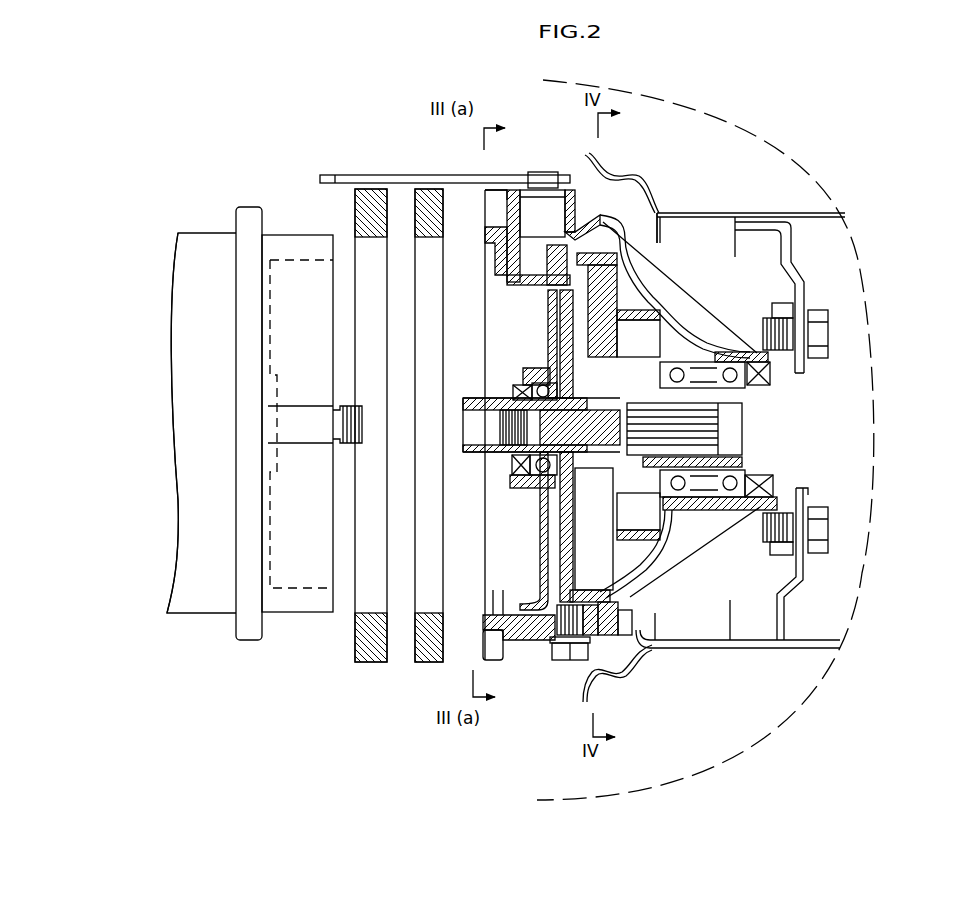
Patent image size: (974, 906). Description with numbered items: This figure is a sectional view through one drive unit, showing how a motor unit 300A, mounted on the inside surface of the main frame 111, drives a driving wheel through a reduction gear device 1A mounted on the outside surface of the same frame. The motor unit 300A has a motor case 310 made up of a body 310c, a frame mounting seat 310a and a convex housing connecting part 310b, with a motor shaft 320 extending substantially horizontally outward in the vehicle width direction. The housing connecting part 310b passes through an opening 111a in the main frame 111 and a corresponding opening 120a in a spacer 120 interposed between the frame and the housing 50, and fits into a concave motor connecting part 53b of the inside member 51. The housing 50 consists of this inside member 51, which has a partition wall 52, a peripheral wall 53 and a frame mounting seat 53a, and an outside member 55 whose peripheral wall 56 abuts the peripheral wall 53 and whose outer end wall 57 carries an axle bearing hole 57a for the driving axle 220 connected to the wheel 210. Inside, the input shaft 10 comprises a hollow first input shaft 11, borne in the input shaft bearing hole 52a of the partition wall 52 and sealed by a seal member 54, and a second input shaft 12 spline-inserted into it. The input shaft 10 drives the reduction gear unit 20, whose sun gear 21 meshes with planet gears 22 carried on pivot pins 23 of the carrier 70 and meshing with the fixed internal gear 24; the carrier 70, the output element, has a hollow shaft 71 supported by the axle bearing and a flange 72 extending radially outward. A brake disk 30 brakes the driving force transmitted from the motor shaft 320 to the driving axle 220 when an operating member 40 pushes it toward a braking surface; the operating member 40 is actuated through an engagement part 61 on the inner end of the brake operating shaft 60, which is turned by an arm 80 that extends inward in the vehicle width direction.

The reduction gear device 1A is at (846, 170).
The input shaft 10 is at (478, 537).
The first input shaft 11 is at (476, 452).
The second input shaft 12 is at (541, 488).
The reduction gear unit 20 is at (640, 305).
The sun gear 21 is at (655, 648).
The planet gears 22 is at (604, 287).
The pivot pins 23 is at (635, 335).
The internal gear 24 is at (657, 212).
The brake disk 30 is at (559, 312).
The operating member 40 is at (610, 175).
The housing 50 is at (572, 678).
The inside member 51 is at (516, 770).
The partition wall 52 is at (515, 640).
The input shaft bearing hole 52a is at (512, 394).
The peripheral wall 53 is at (537, 640).
The frame mounting seat 53a is at (486, 196).
The motor connecting part 53b is at (490, 258).
The seal member 54 is at (803, 377).
The outside member 55 is at (779, 103).
The peripheral wall 56 is at (585, 213).
The outer end wall 57 is at (790, 213).
The axle bearing hole 57a is at (760, 400).
The brake operating shaft 60 is at (542, 208).
The engagement part 61 is at (546, 270).
The carrier 70 is at (682, 500).
The hollow shaft 71 is at (745, 511).
The flange 72 is at (662, 352).
The arm 80 is at (386, 175).
The main frame 111 is at (372, 665).
The opening 111a is at (366, 598).
The spacer 120 is at (428, 665).
The opening 120a is at (422, 598).
The wheel 210 is at (795, 258).
The driving axle 220 is at (735, 430).
The motor unit 300A is at (221, 391).
The motor case 310 is at (195, 195).
The frame mounting seat 310a is at (250, 207).
The housing connecting part 310b is at (300, 240).
The body 310c is at (188, 295).
The motor shaft 320 is at (315, 432).